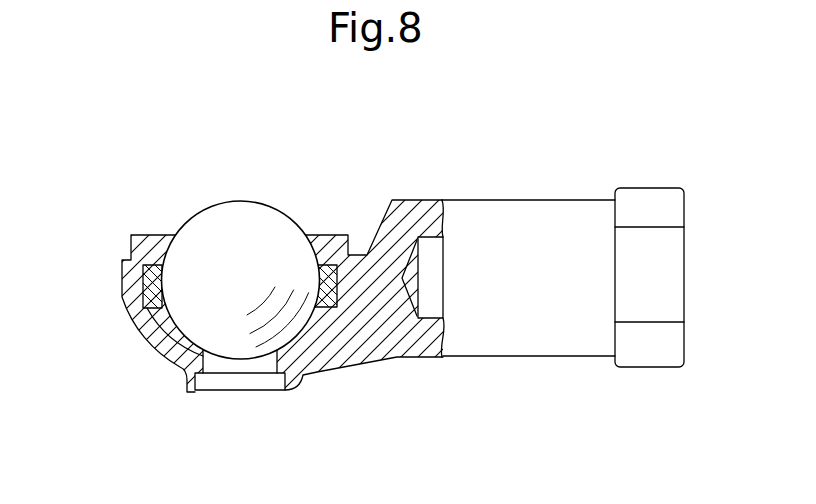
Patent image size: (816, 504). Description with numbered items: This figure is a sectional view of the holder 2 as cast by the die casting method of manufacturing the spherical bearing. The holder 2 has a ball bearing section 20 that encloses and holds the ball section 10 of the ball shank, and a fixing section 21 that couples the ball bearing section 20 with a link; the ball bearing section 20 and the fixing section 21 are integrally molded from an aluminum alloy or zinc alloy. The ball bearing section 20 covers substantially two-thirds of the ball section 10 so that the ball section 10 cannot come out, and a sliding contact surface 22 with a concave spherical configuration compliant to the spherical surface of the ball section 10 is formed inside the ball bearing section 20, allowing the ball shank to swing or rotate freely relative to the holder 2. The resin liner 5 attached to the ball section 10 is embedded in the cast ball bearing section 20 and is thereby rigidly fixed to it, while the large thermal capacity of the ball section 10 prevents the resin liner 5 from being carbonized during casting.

The holder 2 is at (420, 356).
The resin liner 5 is at (150, 293).
The ball section 10 is at (241, 201).
The ball bearing section 20 is at (150, 350).
The fixing section 21 is at (549, 198).
The sliding contact surface 22 is at (192, 330).